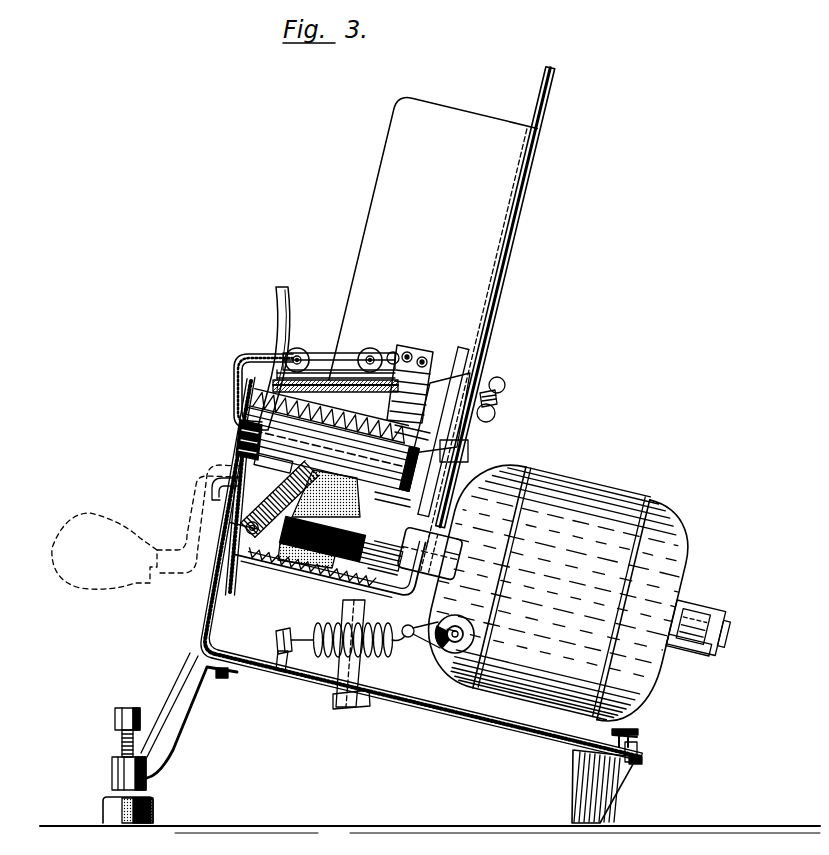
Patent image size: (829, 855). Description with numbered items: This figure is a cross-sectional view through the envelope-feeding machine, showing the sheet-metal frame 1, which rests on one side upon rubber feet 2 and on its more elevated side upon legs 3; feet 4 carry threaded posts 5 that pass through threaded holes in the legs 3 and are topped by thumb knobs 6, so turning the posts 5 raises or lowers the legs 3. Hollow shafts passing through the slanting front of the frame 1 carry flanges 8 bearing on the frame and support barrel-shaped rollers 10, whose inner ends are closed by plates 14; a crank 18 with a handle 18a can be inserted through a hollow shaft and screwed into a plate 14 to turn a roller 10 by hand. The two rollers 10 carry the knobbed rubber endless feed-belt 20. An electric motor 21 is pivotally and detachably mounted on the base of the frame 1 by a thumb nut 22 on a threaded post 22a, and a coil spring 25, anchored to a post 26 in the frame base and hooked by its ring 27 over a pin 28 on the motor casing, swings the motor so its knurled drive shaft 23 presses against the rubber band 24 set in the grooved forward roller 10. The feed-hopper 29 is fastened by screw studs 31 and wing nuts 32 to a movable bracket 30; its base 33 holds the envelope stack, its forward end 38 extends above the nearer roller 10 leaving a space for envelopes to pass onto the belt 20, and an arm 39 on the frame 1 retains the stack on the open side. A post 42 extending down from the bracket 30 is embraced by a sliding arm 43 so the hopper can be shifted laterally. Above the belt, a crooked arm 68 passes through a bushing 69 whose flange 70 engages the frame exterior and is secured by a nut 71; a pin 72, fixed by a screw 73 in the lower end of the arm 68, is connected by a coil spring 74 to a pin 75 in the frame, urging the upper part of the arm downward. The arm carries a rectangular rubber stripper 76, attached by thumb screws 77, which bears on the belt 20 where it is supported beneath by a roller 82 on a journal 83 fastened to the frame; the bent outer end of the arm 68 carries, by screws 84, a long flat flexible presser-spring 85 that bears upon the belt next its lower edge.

The frame 1 is at (210, 601).
The rubber feet 2 is at (612, 805).
The legs 3 is at (177, 738).
The feet 4 is at (152, 810).
The threaded posts 5 is at (122, 745).
The thumb knobs 6 is at (128, 708).
The flanges 8 is at (221, 498).
The rollers 10 is at (380, 531).
The plates 14 is at (398, 512).
The crank 18 is at (198, 485).
The handle 18a is at (104, 520).
The endless feed-belt 20 is at (243, 578).
The electric motor 21 is at (580, 593).
The thumb nut 22 is at (636, 736).
The threaded post 22a is at (645, 745).
The drive shaft 23 is at (392, 532).
The rubber band 24 is at (322, 519).
The coil spring 25 is at (326, 622).
The post 26 is at (277, 640).
The ring 27 is at (410, 639).
The pin 28 is at (458, 614).
The feed-hopper 29 is at (505, 270).
The movable bracket 30 is at (465, 480).
The screw studs 31 is at (503, 400).
The wing nuts 32 is at (496, 416).
The base of the feed-hopper 33 is at (446, 456).
The forward end of the feed-hopper 38 is at (433, 239).
The arm 39 is at (281, 316).
The post 42 is at (362, 665).
The sliding arm 43 is at (398, 710).
The crooked arm 68 is at (245, 364).
The bushing 69 is at (328, 449).
The flange 70 is at (244, 445).
The nut 71 is at (273, 466).
The pin 72 is at (328, 445).
The screw 73 is at (330, 417).
The coil spring 74 is at (280, 499).
The pin 75 is at (240, 535).
The rubber stripper 76 is at (330, 380).
The thumb screws 77 is at (298, 349).
The roller 82 is at (412, 437).
The journal 83 is at (432, 430).
The screws 84 is at (408, 352).
The presser-spring 85 is at (433, 372).